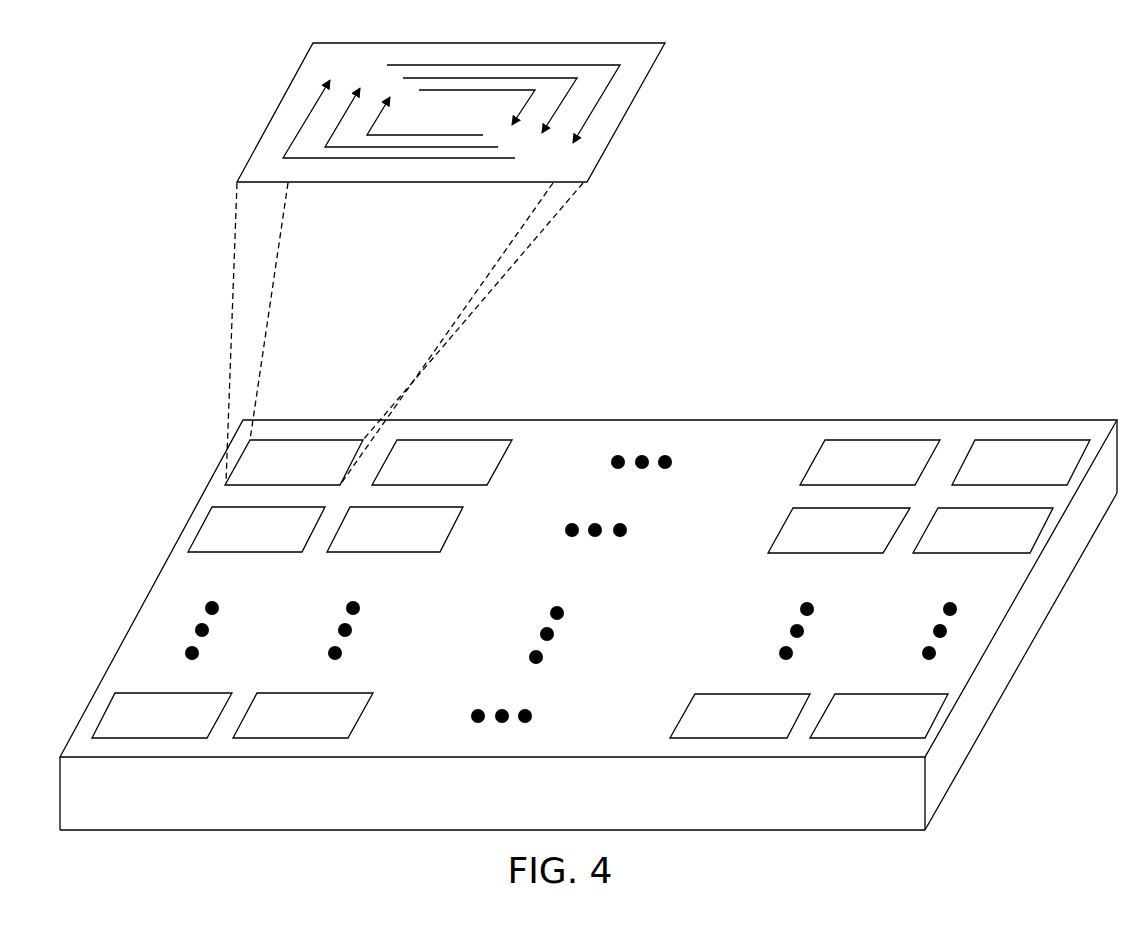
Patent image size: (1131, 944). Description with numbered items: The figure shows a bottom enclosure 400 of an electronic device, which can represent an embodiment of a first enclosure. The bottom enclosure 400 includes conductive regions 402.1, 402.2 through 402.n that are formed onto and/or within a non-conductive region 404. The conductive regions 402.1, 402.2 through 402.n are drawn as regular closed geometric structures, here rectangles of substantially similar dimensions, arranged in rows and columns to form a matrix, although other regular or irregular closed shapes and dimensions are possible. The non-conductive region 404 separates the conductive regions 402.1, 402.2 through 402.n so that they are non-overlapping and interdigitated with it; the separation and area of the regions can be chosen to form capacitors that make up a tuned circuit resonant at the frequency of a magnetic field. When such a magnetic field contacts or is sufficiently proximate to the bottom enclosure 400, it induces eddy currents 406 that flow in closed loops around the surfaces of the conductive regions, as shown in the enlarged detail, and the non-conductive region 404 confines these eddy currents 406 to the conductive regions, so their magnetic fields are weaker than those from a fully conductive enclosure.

The bottom enclosure 400 is at (1068, 392).
The conductive region 402.1 is at (270, 473).
The conductive region 402.2 is at (230, 541).
The conductive region 402.n is at (862, 728).
The non-conductive region 404 is at (636, 643).
The eddy currents 406 is at (424, 123).